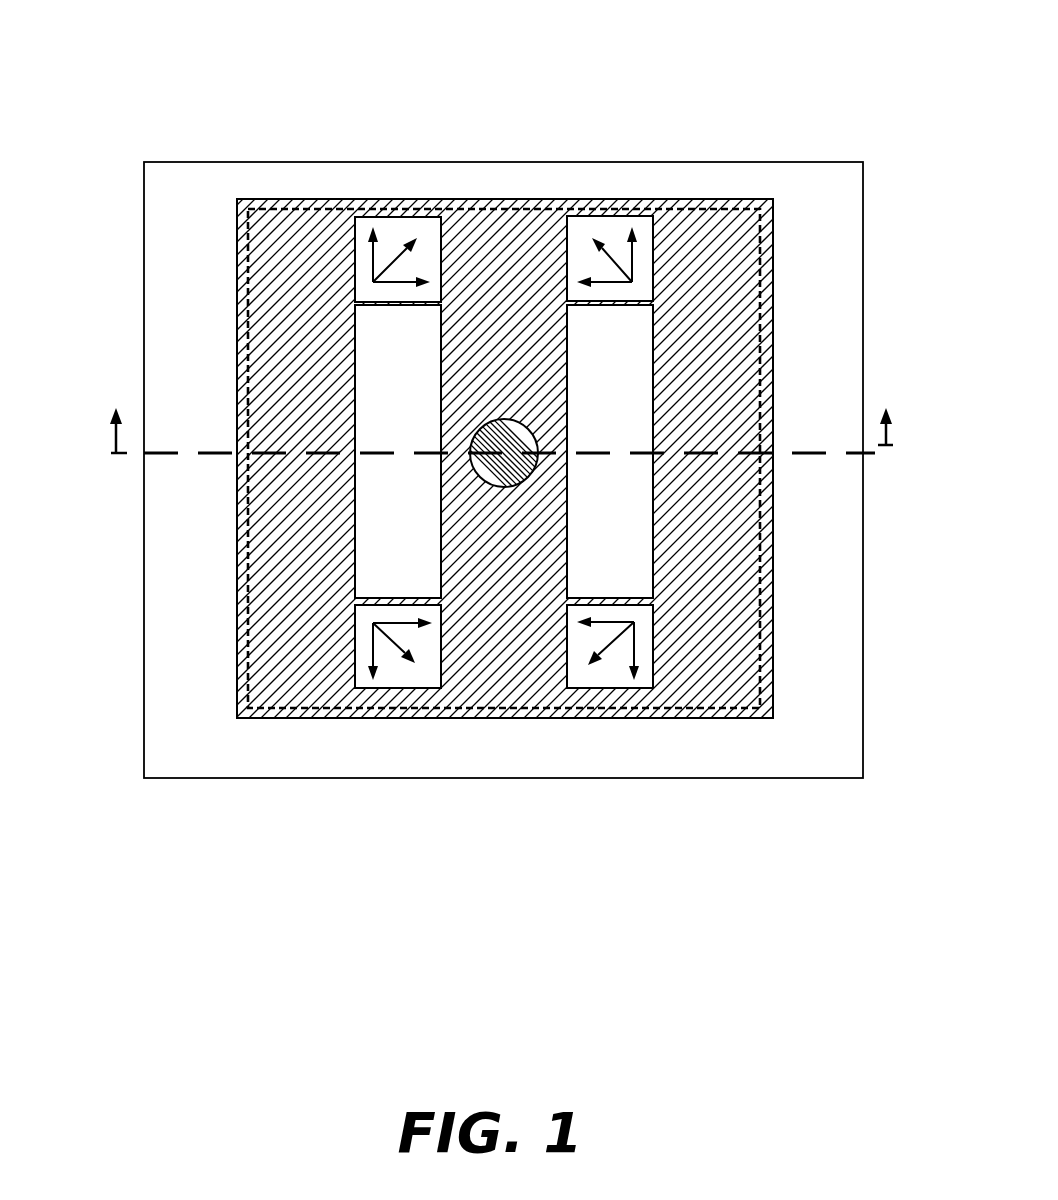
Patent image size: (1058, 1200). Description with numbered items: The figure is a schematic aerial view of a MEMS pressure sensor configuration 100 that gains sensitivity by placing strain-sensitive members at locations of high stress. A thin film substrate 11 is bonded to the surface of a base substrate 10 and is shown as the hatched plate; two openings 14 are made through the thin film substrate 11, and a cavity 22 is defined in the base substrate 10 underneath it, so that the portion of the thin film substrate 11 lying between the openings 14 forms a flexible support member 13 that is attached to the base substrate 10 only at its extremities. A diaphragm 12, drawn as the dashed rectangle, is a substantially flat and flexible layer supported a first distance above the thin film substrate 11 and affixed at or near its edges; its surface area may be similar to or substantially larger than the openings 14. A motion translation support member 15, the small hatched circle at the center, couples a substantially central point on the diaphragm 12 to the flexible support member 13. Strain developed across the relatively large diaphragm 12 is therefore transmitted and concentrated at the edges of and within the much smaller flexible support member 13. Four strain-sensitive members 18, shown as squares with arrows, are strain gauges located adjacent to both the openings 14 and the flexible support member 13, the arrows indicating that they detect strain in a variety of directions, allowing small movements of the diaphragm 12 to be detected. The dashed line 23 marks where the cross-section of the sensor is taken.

The MEMS pressure sensor configuration 100 is at (812, 92).
The base substrate 10 is at (143, 686).
The thin film substrate 11 is at (242, 548).
The diaphragm 12 is at (760, 632).
The flexible support member 13 is at (508, 528).
The opening 14 is at (449, 570).
The motion translation support member 15 is at (504, 419).
The strain-sensitive member 18 is at (390, 215).
The cavity 22 is at (366, 406).
The dashed line 23 is at (817, 450).